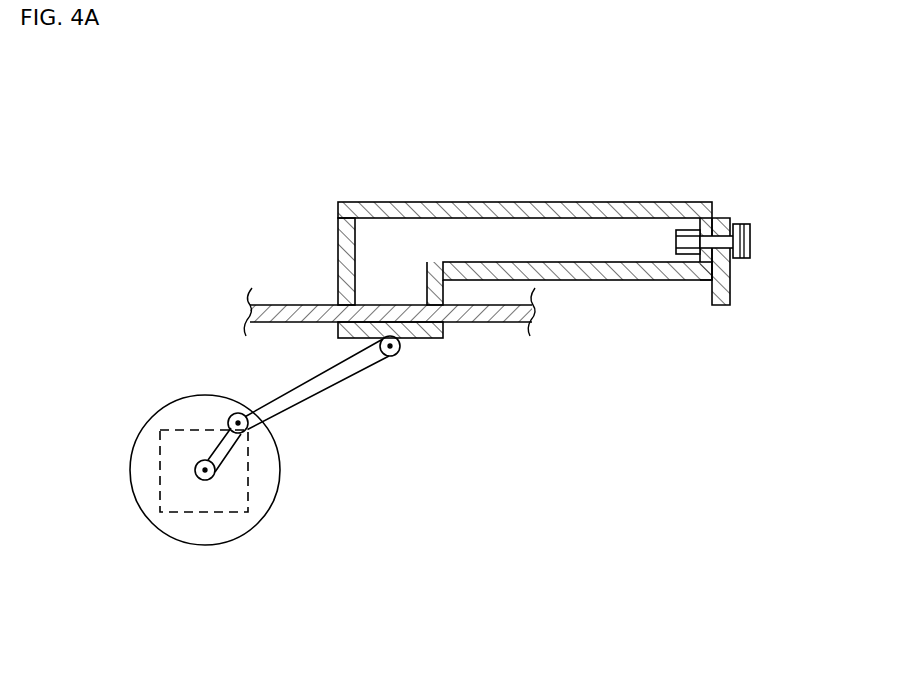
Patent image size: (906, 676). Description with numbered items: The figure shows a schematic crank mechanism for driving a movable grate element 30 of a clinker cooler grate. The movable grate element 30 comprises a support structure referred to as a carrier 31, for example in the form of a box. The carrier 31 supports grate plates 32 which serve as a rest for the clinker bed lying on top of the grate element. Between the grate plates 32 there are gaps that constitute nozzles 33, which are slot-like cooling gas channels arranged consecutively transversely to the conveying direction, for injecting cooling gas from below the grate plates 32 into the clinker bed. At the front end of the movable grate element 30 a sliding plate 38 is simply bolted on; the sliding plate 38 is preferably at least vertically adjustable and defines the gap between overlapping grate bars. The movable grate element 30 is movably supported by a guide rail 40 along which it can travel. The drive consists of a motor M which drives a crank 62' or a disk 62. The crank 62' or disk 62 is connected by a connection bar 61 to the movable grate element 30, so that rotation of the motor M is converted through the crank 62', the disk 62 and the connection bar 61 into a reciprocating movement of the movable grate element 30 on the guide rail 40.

The movable grate element 30 is at (338, 166).
The carrier 31 is at (346, 226).
The grate plate 32 is at (383, 202).
The nozzle 33 is at (456, 202).
The sliding plate 38 is at (730, 279).
The guide rail 40 is at (490, 323).
The connection bar 61 is at (351, 368).
The disk 62 is at (205, 519).
The crank 62' is at (286, 463).
The motor M is at (160, 470).